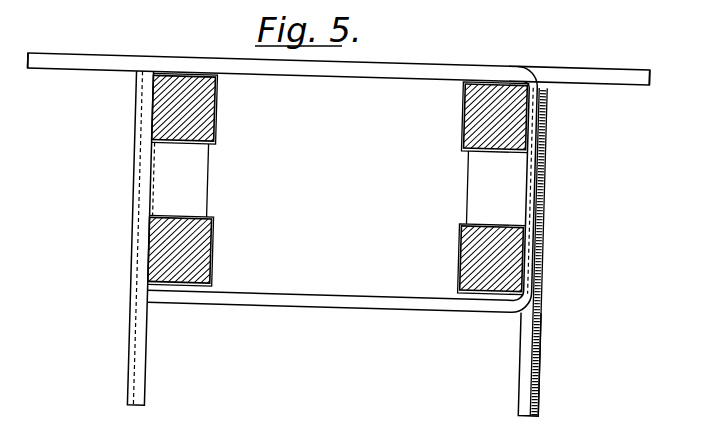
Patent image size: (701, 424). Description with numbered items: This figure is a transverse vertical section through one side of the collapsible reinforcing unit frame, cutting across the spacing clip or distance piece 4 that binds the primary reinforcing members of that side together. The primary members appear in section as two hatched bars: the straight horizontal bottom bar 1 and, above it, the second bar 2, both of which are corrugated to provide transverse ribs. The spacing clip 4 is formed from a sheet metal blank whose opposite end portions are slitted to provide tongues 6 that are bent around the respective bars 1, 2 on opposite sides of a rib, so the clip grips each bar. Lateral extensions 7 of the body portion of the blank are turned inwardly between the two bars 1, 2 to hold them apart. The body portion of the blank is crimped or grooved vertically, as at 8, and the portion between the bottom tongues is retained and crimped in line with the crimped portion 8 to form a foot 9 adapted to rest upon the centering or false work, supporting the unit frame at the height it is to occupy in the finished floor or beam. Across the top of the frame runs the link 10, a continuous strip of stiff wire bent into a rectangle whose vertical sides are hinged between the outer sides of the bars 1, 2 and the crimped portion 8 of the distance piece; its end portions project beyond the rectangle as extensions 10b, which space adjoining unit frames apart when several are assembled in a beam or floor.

The bottom bar 1 is at (193, 251).
The second bar 2 is at (197, 110).
The spacing clip 4 is at (157, 172).
The tongues 6 is at (216, 96).
The lateral extensions 7 is at (204, 176).
The crimped portion 8 is at (145, 200).
The foot 9 is at (142, 337).
The link 10 is at (362, 101).
The extensions 10b is at (98, 47).